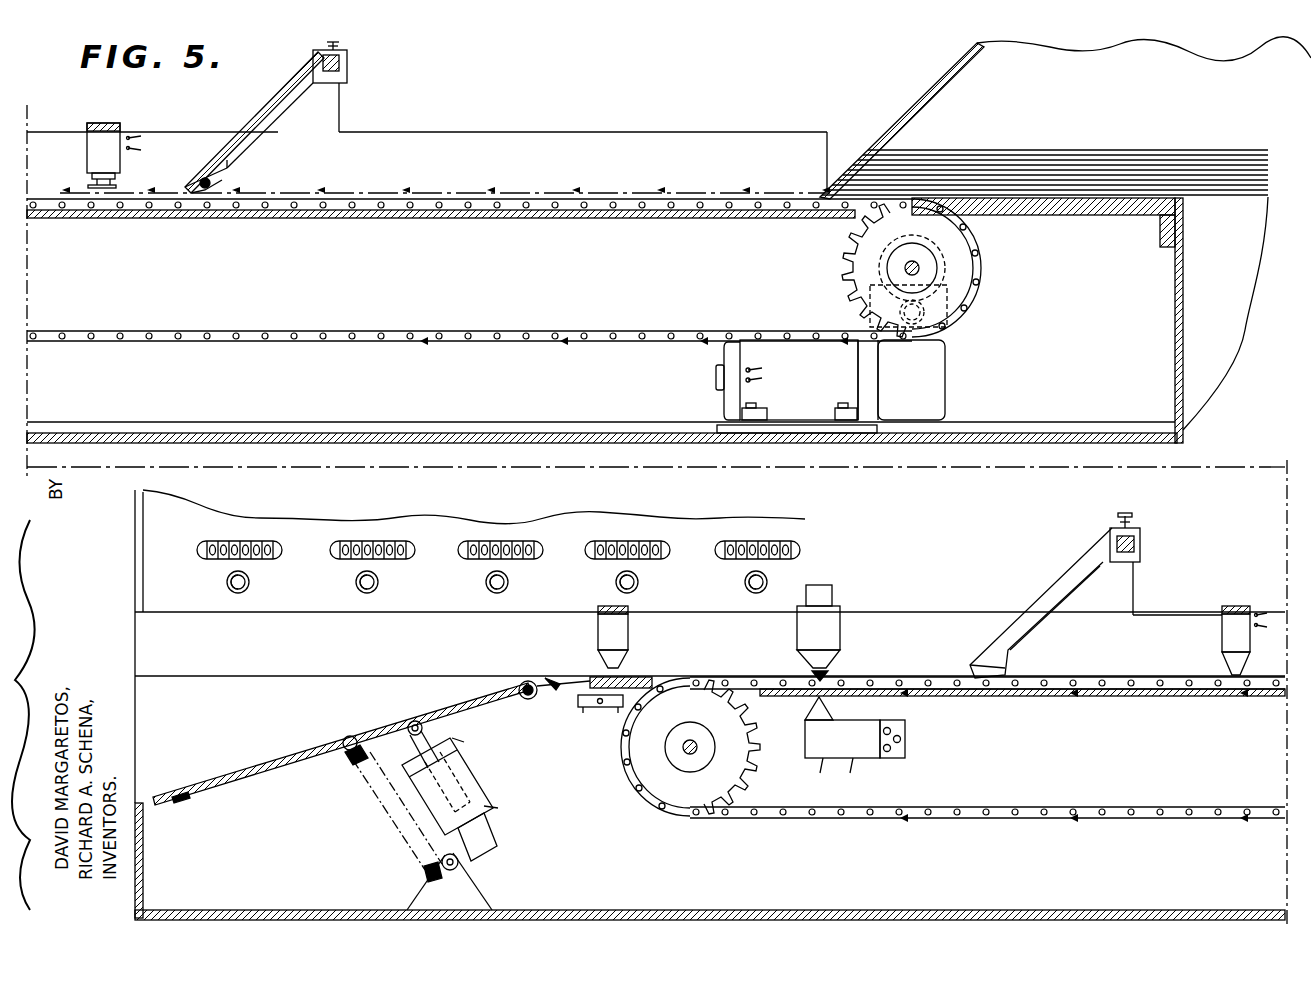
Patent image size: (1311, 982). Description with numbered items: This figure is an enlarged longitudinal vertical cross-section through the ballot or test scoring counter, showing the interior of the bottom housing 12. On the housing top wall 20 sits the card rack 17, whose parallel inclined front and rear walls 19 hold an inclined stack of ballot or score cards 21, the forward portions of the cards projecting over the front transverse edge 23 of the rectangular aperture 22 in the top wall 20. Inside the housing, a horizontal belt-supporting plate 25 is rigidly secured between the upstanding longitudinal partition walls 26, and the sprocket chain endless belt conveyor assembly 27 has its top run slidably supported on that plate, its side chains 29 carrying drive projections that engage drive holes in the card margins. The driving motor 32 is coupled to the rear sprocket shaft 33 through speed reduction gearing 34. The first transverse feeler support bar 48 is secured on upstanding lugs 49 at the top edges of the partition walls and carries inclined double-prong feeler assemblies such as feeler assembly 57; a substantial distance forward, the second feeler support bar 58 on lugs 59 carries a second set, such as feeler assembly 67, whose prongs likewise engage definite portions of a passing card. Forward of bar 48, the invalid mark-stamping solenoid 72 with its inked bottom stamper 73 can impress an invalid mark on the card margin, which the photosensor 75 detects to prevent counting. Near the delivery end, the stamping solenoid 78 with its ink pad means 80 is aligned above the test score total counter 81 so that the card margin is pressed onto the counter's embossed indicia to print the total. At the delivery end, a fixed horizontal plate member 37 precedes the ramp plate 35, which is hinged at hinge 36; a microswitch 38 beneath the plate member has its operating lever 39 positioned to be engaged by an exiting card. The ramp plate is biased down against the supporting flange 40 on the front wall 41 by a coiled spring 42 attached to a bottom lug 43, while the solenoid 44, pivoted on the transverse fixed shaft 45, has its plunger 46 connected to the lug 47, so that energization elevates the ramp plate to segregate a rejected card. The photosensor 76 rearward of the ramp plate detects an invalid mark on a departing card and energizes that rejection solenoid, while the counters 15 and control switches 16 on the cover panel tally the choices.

The bottom housing 12 is at (1183, 276).
The electrically-operated counters 15 is at (207, 560).
The control switches 16 is at (245, 586).
The ballot or test card rack 17 is at (1190, 99).
The inclined front and rear walls 19 is at (872, 130).
The top wall 20 is at (1058, 217).
The ballot or score cards 21 is at (1032, 152).
The rectangular aperture 22 is at (975, 224).
The front transverse edge 23 is at (926, 206).
The belt-supporting plate 25 is at (426, 214).
The longitudinal partition walls 26 is at (488, 654).
The sprocket chain endless belt conveyor assembly 27 is at (512, 342).
The side chains 29 is at (614, 203).
The driving motor 32 is at (732, 398).
The rear sprocket shaft 33 is at (905, 268).
The speed reduction gearing 34 is at (945, 386).
The ramp plate 35 is at (236, 768).
The hinge 36 is at (531, 698).
The fixed horizontal plate member 37 is at (632, 682).
The microswitch 38 is at (600, 712).
The operating lever 39 is at (548, 680).
The supporting flange 40 is at (186, 798).
The front wall 41 is at (141, 876).
The coiled spring 42 is at (376, 812).
The bottom lug 43 is at (345, 754).
The solenoid 44 is at (490, 808).
The transverse fixed shaft 45 is at (455, 872).
The solenoid plunger 46 is at (426, 742).
The lug 47 is at (410, 740).
The first transverse feeler support bar 48 is at (347, 62).
The upstanding lugs 49 is at (328, 112).
The double-prong feeler assembly 57 is at (270, 108).
The second transverse feeler support bar 58 is at (1141, 546).
The upstanding lugs 59 is at (1128, 595).
The double-prong feeler assembly 67 is at (1062, 582).
The invalid mark-stamping solenoid 72 is at (87, 156).
The inked bottom stamper 73 is at (112, 186).
The photosensor 75 is at (1224, 643).
The photosensor 76 is at (628, 633).
The stamping solenoid 78 is at (840, 637).
The ink pad means 80 is at (832, 674).
The test score total counter 81 is at (810, 724).